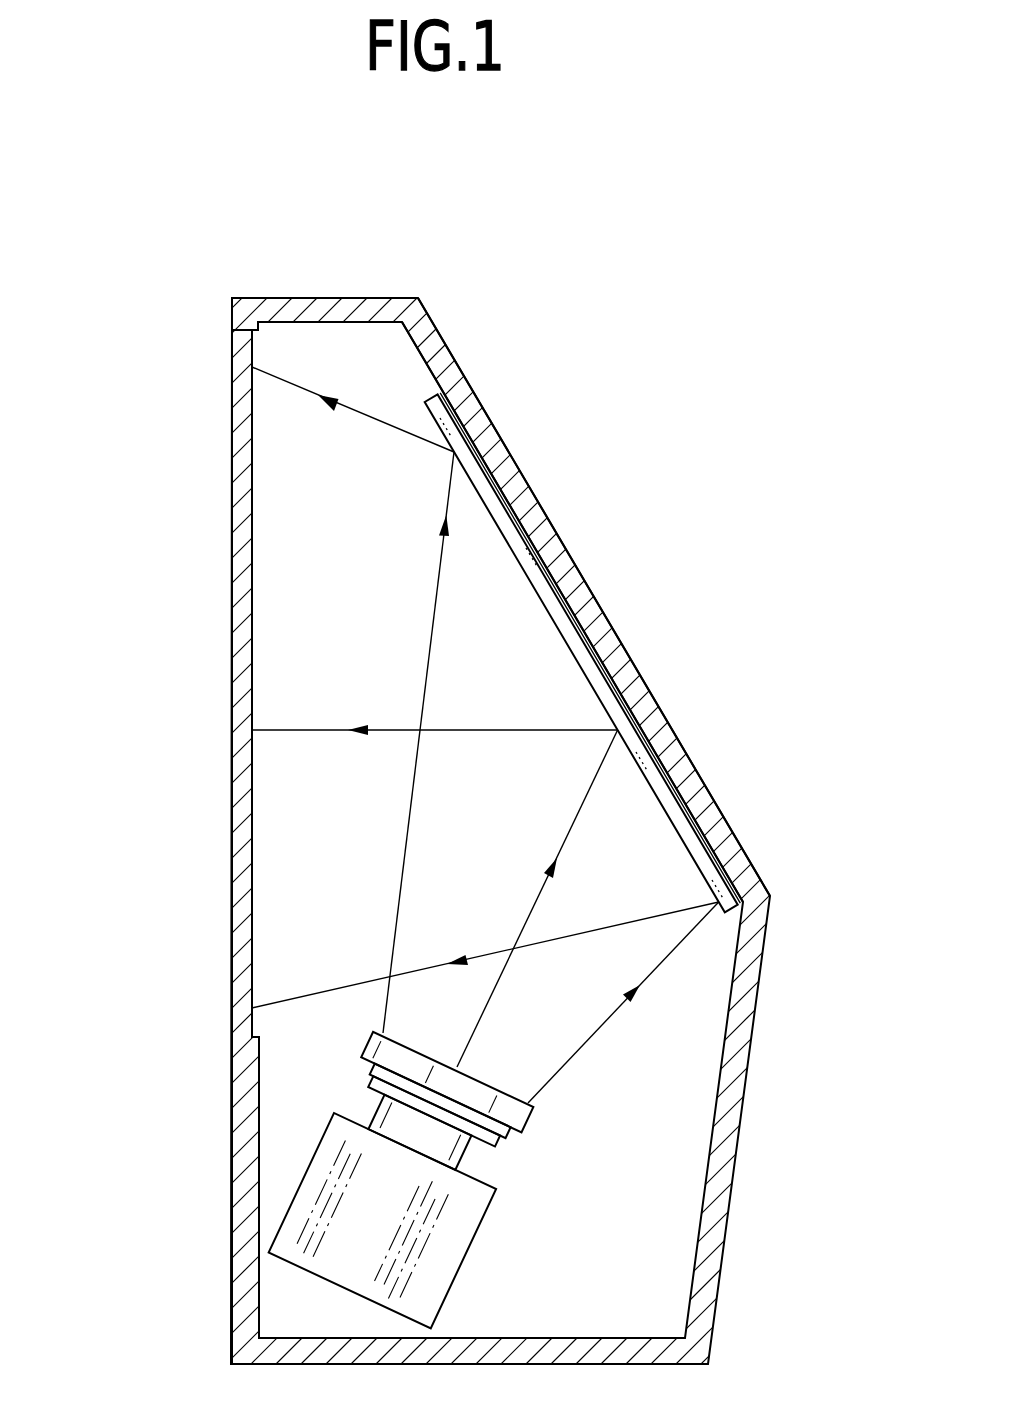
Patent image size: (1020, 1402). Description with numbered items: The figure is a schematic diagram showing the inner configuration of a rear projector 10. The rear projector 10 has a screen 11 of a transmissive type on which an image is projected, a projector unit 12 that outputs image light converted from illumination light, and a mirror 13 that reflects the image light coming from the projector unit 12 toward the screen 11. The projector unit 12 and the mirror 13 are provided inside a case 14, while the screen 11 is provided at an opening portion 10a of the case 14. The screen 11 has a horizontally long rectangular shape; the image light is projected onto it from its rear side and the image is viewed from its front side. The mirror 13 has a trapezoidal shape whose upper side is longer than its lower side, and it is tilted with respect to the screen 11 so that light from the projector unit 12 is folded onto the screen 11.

The rear projector 10 is at (439, 252).
The opening portion 10a is at (233, 1028).
The screen 11 is at (243, 515).
The projector unit 12 is at (478, 1262).
The mirror 13 is at (512, 527).
The case 14 is at (602, 637).